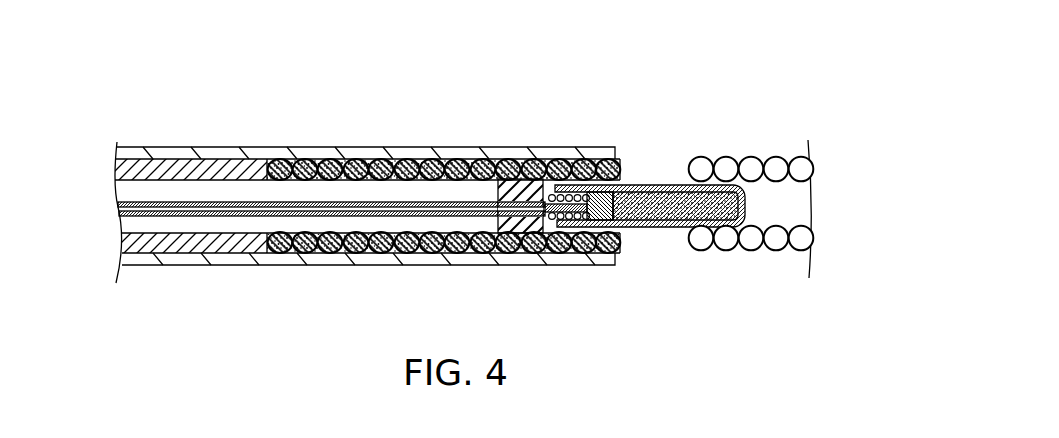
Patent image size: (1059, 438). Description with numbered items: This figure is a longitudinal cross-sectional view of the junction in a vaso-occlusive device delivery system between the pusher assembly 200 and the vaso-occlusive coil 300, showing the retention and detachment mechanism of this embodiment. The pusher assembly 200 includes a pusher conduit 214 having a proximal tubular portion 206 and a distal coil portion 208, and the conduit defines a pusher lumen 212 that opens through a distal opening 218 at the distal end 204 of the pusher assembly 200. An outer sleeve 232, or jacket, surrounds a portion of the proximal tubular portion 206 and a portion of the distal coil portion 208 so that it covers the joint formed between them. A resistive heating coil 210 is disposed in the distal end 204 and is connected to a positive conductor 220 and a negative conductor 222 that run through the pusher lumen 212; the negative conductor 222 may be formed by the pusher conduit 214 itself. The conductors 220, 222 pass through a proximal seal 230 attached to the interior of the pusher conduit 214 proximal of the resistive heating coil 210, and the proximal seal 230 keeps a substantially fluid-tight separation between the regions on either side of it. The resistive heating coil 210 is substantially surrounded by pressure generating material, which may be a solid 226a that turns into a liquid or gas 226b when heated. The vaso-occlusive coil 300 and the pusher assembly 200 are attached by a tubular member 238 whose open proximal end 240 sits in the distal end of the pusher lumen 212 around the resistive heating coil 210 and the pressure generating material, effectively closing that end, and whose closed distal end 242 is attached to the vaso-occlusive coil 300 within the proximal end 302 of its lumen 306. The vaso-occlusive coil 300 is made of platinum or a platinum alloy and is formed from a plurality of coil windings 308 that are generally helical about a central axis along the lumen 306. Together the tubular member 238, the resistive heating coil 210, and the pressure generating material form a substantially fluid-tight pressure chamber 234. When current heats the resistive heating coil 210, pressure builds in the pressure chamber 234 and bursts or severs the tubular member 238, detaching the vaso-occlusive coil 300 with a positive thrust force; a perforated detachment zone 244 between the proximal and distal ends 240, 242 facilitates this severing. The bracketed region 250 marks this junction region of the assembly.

The pusher assembly 200 is at (126, 57).
The distal end 204 is at (307, 66).
The proximal tubular portion 206 is at (143, 158).
The distal coil portion 208 is at (453, 166).
The resistive heating coil 210 is at (563, 186).
The pusher lumen 212 is at (190, 190).
The pusher conduit 214 is at (103, 147).
The distal opening 218 is at (630, 177).
The positive conductor 220 is at (239, 202).
The negative conductor 222 is at (249, 236).
The solid pressure generating material 226a is at (604, 228).
The liquid or gas pressure generating material 226b is at (672, 196).
The proximal seal 230 is at (512, 222).
The outer sleeve 232 is at (288, 159).
The pressure chamber 234 is at (709, 190).
The tubular member 238 is at (679, 232).
The open proximal end 240 is at (567, 222).
The closed distal end 242 is at (733, 232).
The detachment zone 244 is at (652, 228).
The connection region 250 is at (710, 75).
The vaso-occlusive coil 300 is at (793, 58).
The proximal end 302 is at (771, 137).
The lumen 306 is at (763, 240).
The coil windings 308 is at (802, 238).